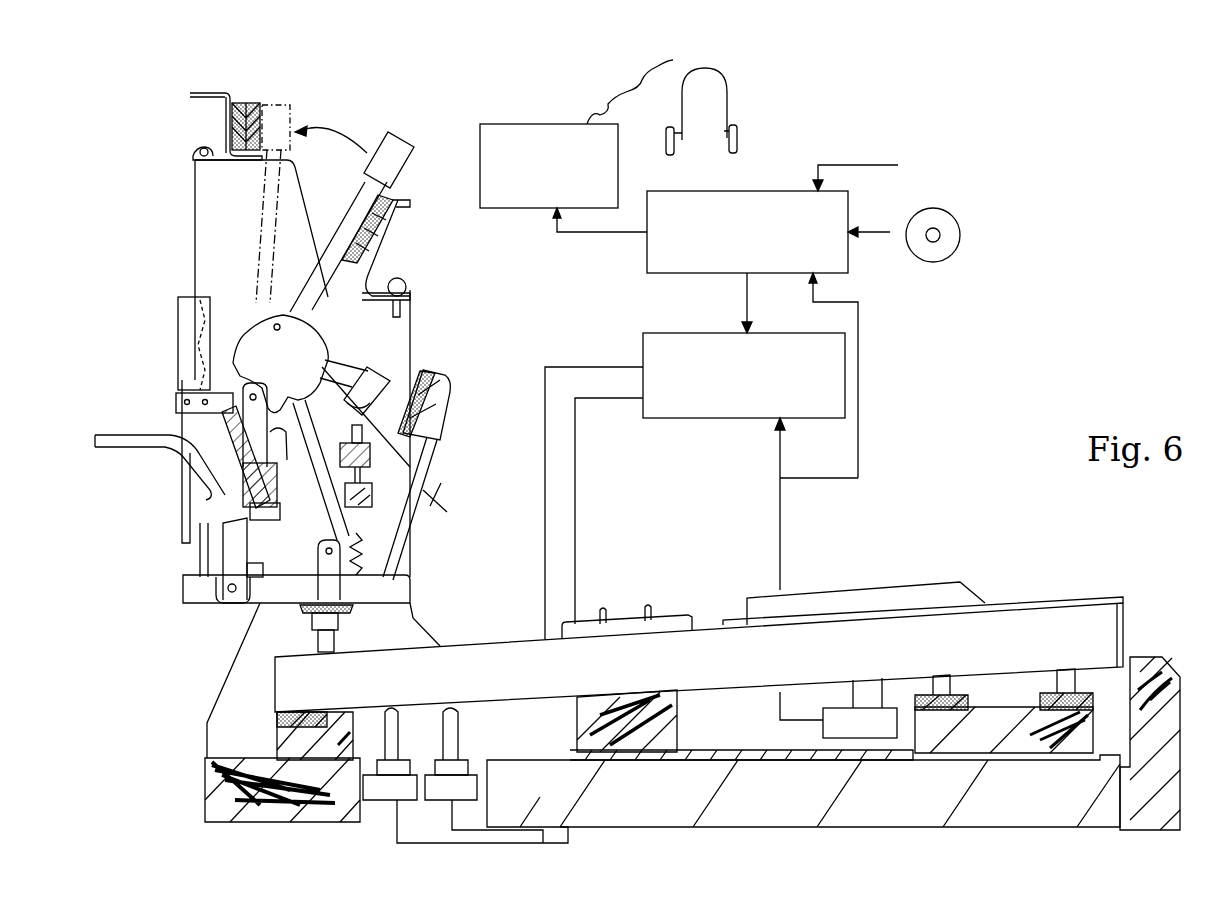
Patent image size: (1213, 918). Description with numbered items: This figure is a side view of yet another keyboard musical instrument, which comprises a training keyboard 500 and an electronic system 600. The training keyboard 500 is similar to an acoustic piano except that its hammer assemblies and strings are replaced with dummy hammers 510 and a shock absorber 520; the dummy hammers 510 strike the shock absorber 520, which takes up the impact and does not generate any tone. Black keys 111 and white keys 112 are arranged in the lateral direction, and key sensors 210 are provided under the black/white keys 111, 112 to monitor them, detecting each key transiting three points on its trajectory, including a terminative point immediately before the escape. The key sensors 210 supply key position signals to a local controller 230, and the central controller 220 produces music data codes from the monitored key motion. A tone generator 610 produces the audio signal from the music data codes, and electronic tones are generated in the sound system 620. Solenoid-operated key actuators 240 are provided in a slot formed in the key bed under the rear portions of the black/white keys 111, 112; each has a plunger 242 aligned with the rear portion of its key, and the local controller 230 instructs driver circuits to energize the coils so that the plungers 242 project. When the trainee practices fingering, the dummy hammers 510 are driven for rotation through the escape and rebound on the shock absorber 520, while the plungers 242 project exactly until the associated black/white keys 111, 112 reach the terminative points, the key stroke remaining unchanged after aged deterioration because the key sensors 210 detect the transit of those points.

The training keyboard 500 is at (1020, 549).
The black keys 111 is at (860, 586).
The white keys 112 is at (1076, 598).
The key sensors 210 is at (823, 728).
The central controller 220 is at (647, 247).
The local controller 230 is at (643, 350).
The solenoid-operated key actuators 240 is at (373, 824).
The plunger 242 is at (432, 740).
The dummy hammers 510 is at (394, 146).
The shock absorber 520 is at (252, 108).
The electronic system 600 is at (865, 130).
The tone generator 610 is at (525, 124).
The sound system 620 is at (733, 90).